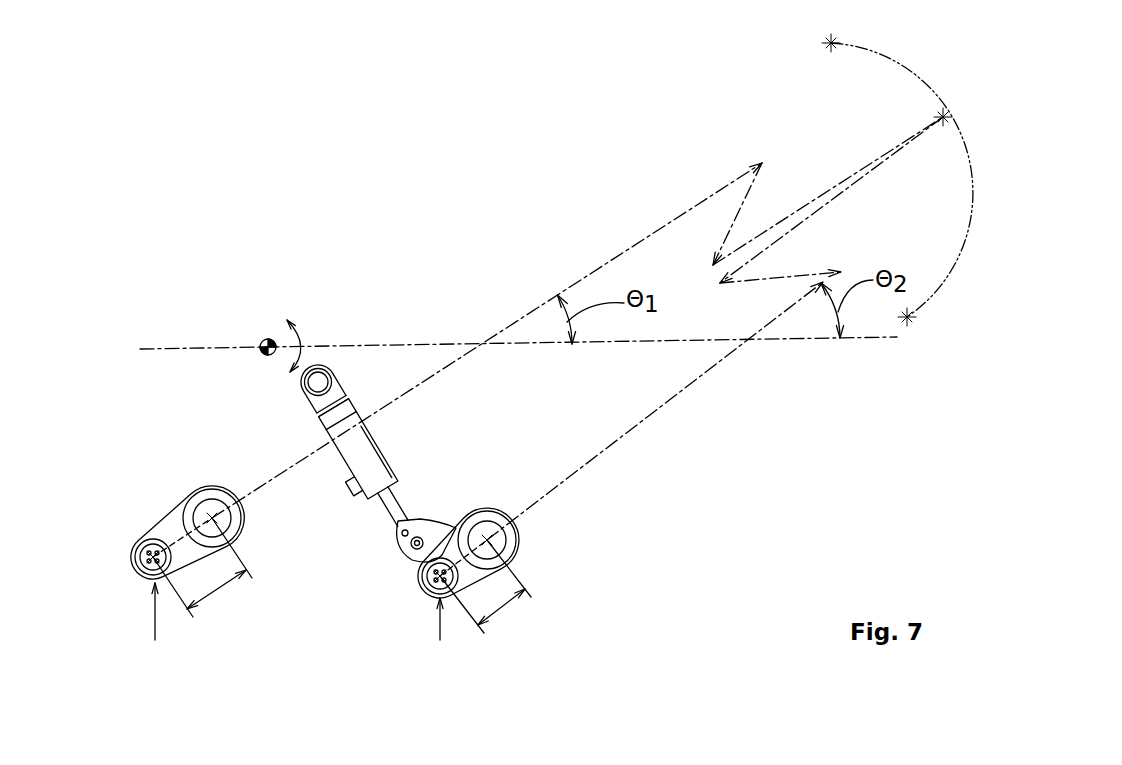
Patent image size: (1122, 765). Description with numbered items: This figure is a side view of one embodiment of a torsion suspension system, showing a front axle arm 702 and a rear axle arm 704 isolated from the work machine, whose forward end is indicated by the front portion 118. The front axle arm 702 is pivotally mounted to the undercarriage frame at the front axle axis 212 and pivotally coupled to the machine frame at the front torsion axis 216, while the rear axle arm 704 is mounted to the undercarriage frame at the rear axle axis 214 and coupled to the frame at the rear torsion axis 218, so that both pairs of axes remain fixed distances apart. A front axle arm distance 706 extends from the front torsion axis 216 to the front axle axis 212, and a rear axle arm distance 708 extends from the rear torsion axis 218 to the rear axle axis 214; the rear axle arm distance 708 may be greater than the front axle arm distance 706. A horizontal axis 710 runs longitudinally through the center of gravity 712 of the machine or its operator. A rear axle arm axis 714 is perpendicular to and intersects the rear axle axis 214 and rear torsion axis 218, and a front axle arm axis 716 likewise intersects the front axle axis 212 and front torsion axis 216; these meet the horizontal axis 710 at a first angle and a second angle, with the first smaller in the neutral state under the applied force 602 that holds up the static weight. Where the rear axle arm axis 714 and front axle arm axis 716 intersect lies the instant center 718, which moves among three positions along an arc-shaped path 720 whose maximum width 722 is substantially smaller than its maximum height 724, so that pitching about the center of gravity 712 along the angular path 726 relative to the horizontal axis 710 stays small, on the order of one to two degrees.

The front portion 118 is at (1018, 478).
The front axle axis 212 is at (425, 584).
The rear axle axis 214 is at (135, 545).
The front torsion axis 216 is at (540, 548).
The rear torsion axis 218 is at (192, 488).
The applied force 602 is at (150, 615).
The front axle arm 702 is at (470, 513).
The rear axle arm 704 is at (167, 502).
The front axle arm distance 706 is at (503, 610).
The rear axle arm distance 708 is at (216, 597).
The horizontal axis 710 is at (176, 345).
The center of gravity 712 is at (268, 338).
The rear axle arm axis 714 is at (618, 255).
The front axle arm axis 716 is at (657, 411).
The instant center 718 is at (952, 108).
The arc-shaped path 720 is at (974, 212).
The maximum width 722 is at (822, 50).
The maximum height 724 is at (912, 322).
The angular path 726 is at (303, 337).